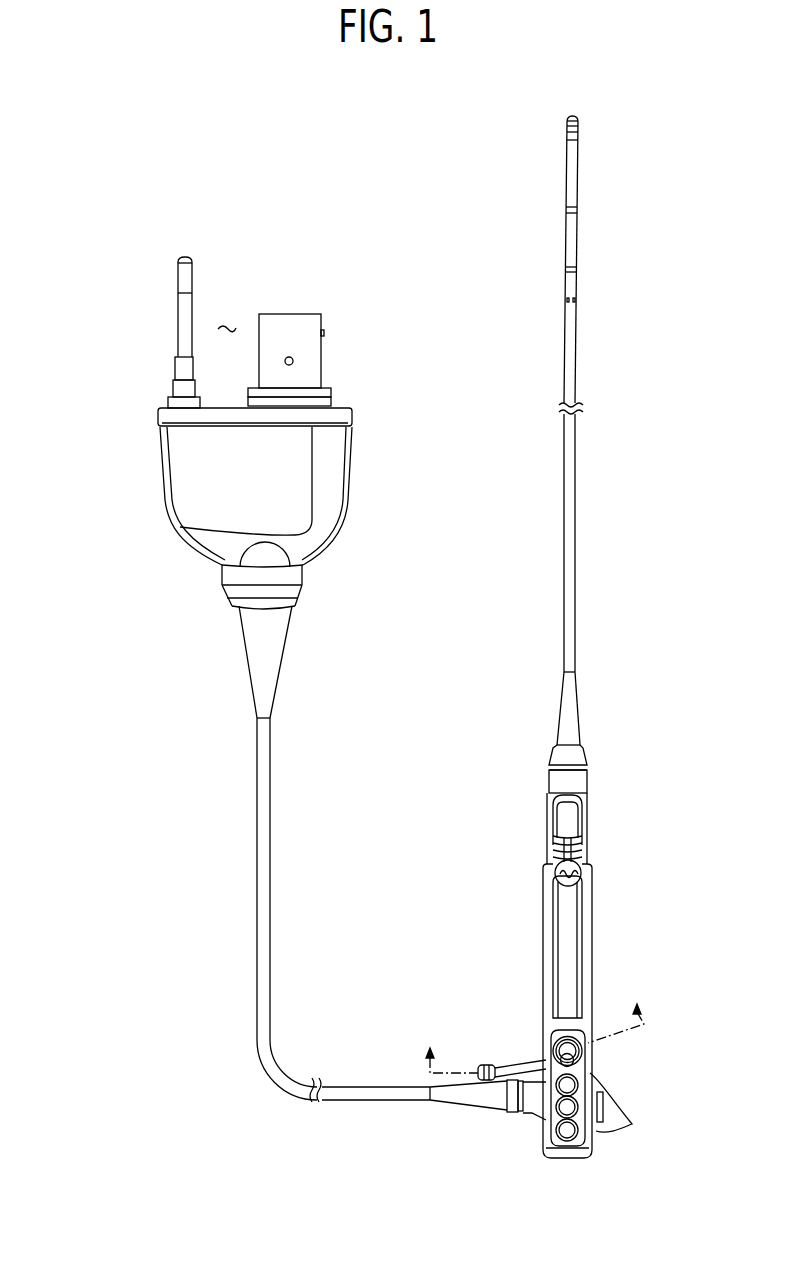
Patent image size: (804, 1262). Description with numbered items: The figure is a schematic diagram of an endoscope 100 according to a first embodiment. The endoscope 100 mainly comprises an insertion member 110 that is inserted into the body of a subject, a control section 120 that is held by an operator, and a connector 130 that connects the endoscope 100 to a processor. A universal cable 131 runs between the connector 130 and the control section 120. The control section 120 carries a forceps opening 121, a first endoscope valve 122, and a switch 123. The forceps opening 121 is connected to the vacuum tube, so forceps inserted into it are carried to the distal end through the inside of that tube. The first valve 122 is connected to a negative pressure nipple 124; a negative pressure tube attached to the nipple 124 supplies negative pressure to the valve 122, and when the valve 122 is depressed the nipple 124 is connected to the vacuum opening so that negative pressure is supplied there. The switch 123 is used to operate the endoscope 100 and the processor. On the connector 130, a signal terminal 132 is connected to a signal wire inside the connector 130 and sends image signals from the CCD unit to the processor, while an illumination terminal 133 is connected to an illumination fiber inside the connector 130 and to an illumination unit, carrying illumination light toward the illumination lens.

The endoscope 100 is at (619, 240).
The insertion member 110 is at (577, 510).
The control section 120 is at (596, 955).
The forceps opening 121 is at (584, 868).
The first endoscope valve 122 is at (583, 1040).
The switch 123 is at (575, 1080).
The negative pressure nipple 124 is at (512, 1060).
The connector 130 is at (168, 513).
The universal cable 131 is at (270, 822).
The signal terminal 132 is at (321, 347).
The illumination terminal 133 is at (177, 281).